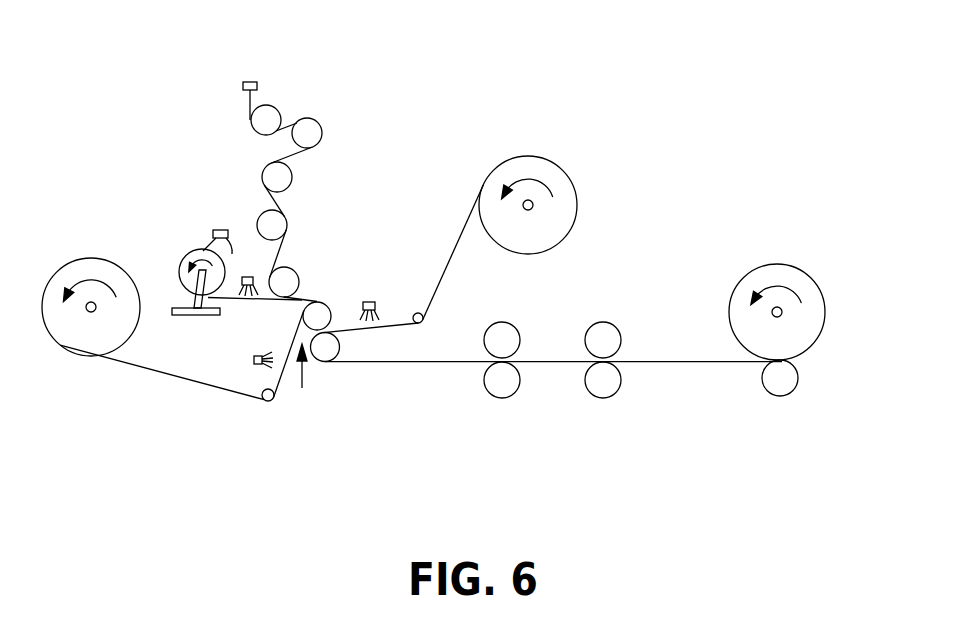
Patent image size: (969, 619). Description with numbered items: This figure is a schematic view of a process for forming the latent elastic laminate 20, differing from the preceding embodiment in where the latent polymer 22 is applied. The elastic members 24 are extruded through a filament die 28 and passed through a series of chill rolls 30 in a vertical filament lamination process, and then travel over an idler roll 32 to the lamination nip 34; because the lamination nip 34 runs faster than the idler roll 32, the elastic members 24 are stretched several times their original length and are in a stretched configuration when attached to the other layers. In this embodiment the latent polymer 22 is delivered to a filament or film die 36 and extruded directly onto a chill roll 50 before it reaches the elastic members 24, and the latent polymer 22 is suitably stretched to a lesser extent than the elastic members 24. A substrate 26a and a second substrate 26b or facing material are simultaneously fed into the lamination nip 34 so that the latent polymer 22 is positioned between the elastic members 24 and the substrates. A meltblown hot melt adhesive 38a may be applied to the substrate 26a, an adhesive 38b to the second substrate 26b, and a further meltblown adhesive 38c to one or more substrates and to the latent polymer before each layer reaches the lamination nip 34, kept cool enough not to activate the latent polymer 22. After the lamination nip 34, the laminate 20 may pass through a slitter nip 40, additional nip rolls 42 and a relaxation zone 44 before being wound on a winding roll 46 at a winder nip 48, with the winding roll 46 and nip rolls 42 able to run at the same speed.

The latent elastic laminate 20 is at (664, 366).
The latent polymer 22 is at (231, 307).
The elastic members 24 is at (277, 202).
The substrate 26a is at (454, 250).
The second substrate 26b is at (125, 363).
The filament die 28 is at (250, 82).
The chill rolls 30 is at (321, 129).
The idler roll 32 is at (293, 275).
The lamination nip 34 is at (312, 380).
The filament or film die 36 is at (220, 229).
The adhesive 38a is at (369, 302).
The meltblown adhesive 38b is at (254, 360).
The meltblown adhesive 38c is at (247, 277).
The slitter nip 40 is at (477, 366).
The nip rolls 42 is at (584, 366).
The relaxation zone 44 is at (657, 361).
The winding roll 46 is at (806, 277).
The winder nip 48 is at (797, 362).
The chill roll 50 is at (185, 262).